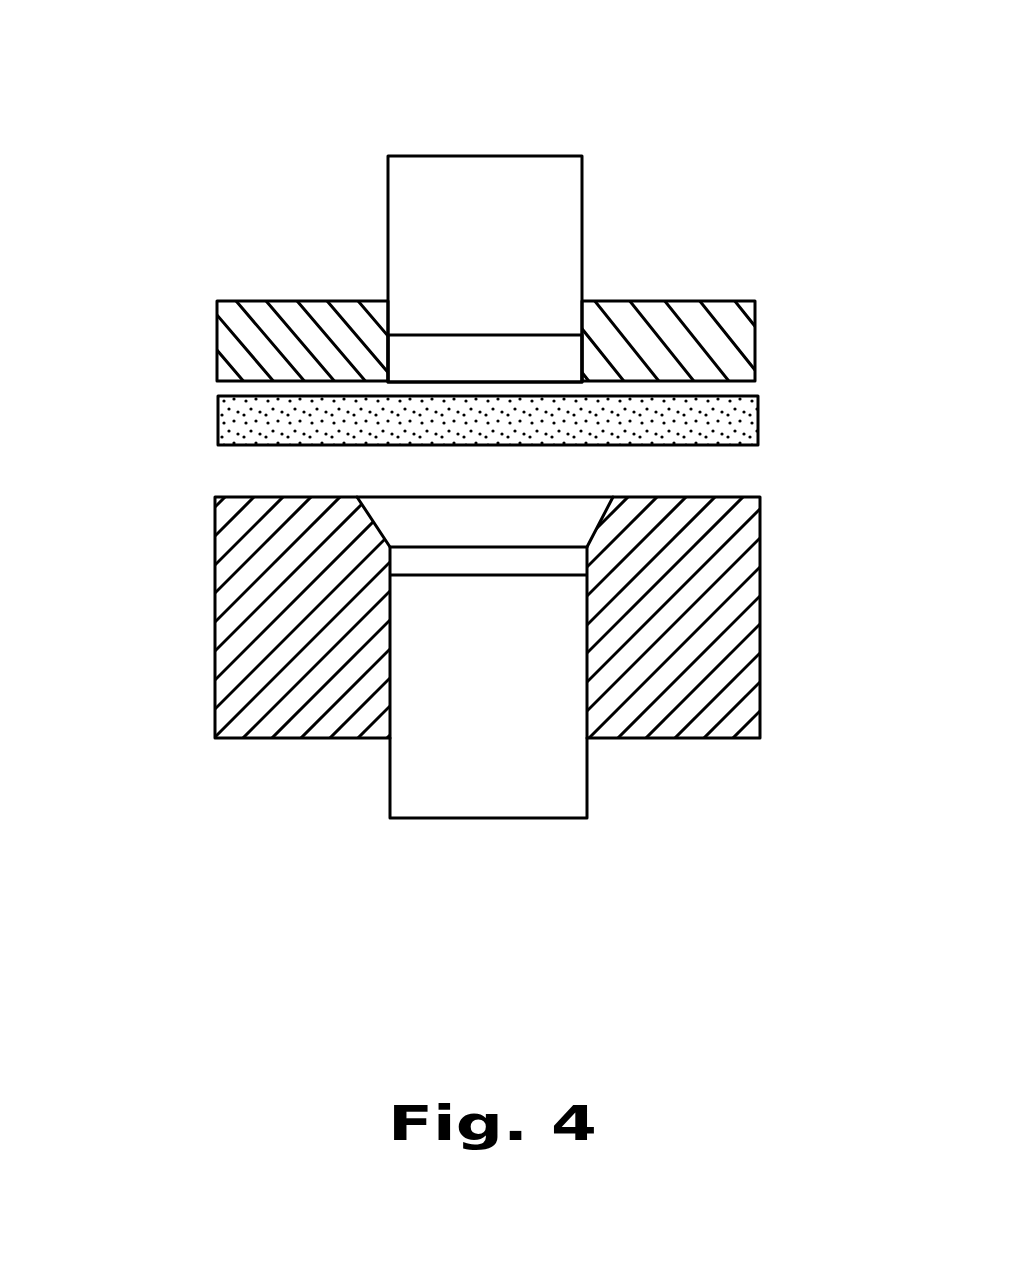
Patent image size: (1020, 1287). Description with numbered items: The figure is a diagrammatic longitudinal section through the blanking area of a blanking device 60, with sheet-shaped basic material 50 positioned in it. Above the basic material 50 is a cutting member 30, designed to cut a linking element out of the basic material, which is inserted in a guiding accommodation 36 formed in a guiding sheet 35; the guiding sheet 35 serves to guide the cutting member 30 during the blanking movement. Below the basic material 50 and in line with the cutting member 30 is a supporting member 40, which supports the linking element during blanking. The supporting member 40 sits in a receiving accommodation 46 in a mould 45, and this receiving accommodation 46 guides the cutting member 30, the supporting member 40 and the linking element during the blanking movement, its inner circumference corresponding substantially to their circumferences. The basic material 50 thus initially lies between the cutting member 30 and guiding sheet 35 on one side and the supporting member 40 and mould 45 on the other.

The blanking device 60 is at (204, 193).
The cutting member 30 is at (485, 193).
The guiding accommodation 36 is at (458, 367).
The guiding sheet 35 is at (677, 340).
The basic material 50 is at (730, 422).
The mould 45 is at (680, 675).
The receiving accommodation 46 is at (423, 525).
The supporting member 40 is at (486, 789).